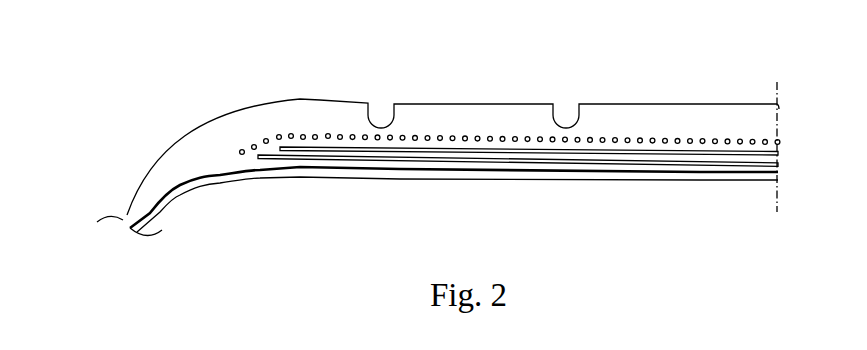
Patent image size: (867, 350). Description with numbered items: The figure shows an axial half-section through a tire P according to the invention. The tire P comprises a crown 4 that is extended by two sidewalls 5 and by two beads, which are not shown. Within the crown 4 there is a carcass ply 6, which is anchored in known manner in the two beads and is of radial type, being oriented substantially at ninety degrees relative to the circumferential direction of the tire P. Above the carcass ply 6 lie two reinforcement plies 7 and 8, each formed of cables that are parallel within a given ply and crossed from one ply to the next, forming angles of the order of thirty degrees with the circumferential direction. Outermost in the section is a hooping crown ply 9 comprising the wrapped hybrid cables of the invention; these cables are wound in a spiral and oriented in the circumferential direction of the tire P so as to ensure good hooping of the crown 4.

The tire P is at (221, 76).
The crown 4 is at (492, 118).
The sidewalls 5 is at (127, 215).
The carcass ply 6 is at (225, 175).
The reinforcement ply 7 is at (425, 158).
The reinforcement ply 8 is at (648, 150).
The hooping crown ply 9 is at (637, 142).